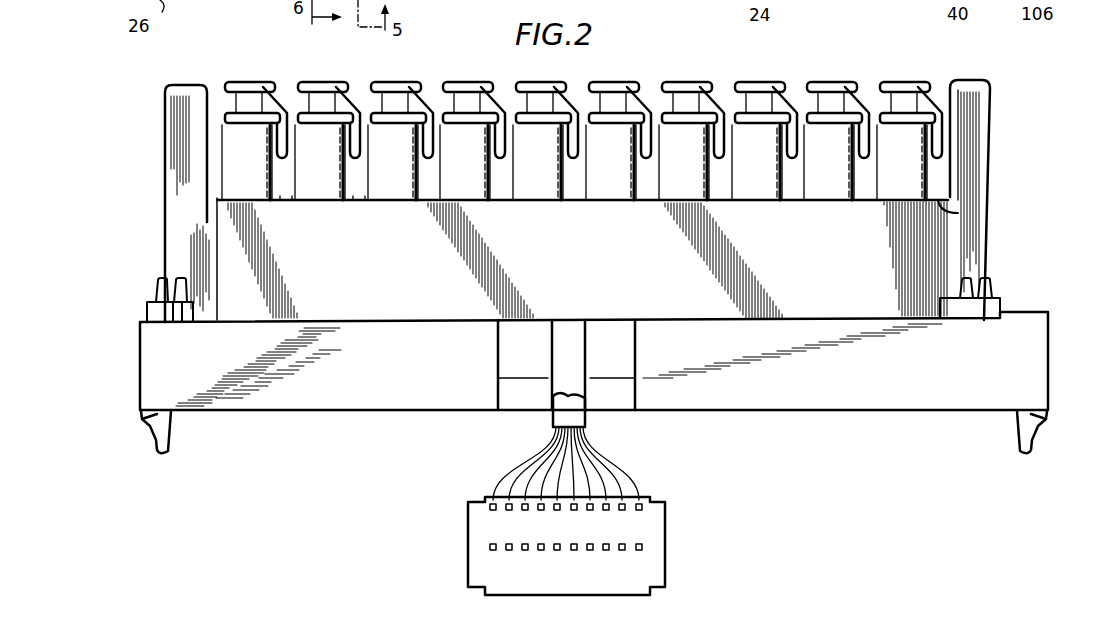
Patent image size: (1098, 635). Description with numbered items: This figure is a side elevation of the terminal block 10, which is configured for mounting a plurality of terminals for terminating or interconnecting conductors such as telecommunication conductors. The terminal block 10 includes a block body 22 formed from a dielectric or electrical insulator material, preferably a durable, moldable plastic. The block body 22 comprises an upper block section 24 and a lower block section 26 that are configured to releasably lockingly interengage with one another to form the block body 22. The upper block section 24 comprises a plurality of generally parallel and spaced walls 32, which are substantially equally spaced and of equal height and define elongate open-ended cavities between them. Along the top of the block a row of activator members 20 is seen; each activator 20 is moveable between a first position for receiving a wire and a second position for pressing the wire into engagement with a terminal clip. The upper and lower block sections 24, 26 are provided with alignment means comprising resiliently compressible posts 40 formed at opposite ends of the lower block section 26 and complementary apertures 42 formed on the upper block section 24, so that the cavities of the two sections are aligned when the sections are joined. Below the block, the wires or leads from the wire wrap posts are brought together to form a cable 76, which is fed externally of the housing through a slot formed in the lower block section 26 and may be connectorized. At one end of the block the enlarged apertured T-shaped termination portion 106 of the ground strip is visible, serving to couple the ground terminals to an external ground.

The terminal block 10 is at (792, 440).
The activator member 20 is at (383, 84).
The block body 22 is at (960, 241).
The upper block section 24 is at (813, 254).
The lower block section 26 is at (893, 381).
The walls 32 is at (360, 203).
The resiliently compressible posts 40 is at (157, 280).
The apertures 42 is at (182, 317).
The cable 76 is at (588, 416).
The T-shaped termination portion 106 is at (1027, 312).